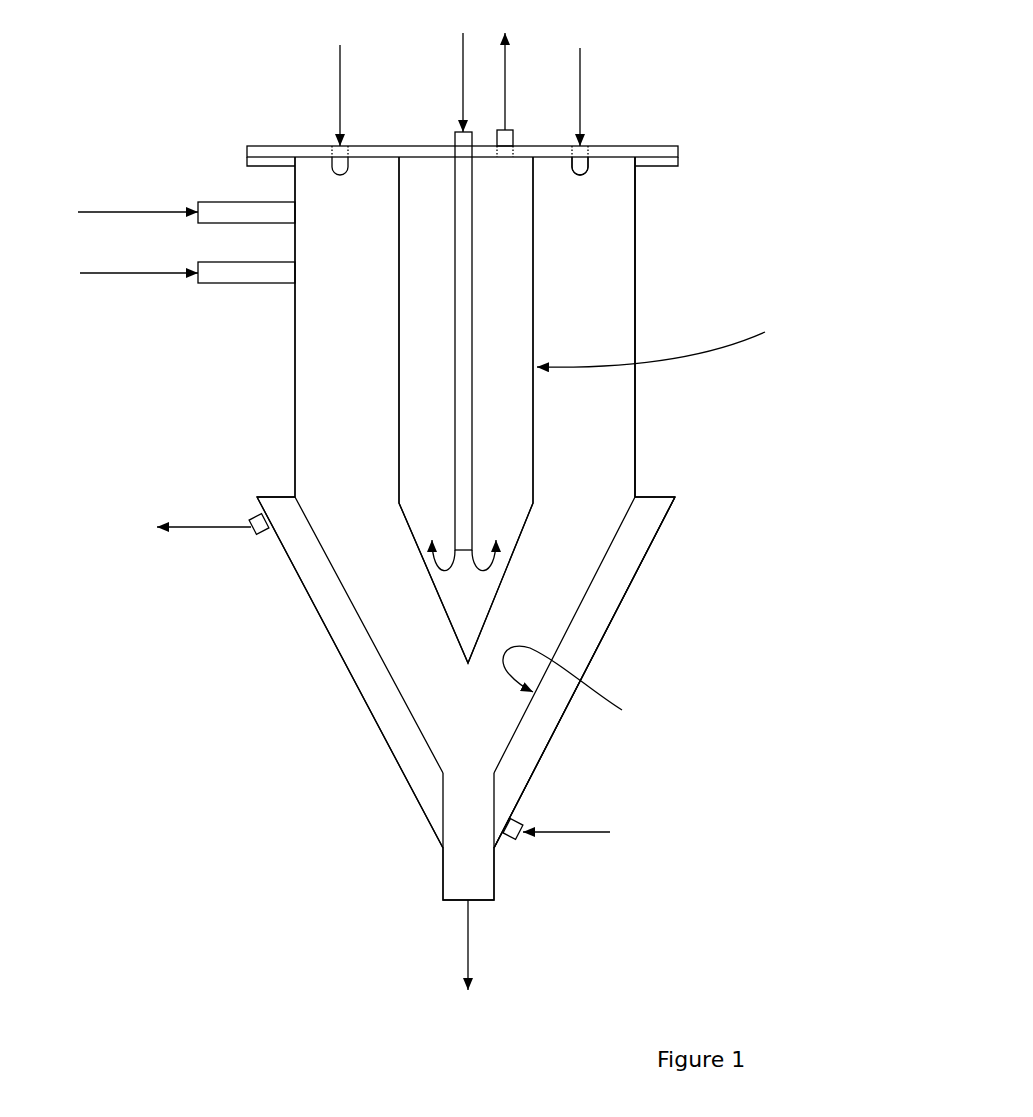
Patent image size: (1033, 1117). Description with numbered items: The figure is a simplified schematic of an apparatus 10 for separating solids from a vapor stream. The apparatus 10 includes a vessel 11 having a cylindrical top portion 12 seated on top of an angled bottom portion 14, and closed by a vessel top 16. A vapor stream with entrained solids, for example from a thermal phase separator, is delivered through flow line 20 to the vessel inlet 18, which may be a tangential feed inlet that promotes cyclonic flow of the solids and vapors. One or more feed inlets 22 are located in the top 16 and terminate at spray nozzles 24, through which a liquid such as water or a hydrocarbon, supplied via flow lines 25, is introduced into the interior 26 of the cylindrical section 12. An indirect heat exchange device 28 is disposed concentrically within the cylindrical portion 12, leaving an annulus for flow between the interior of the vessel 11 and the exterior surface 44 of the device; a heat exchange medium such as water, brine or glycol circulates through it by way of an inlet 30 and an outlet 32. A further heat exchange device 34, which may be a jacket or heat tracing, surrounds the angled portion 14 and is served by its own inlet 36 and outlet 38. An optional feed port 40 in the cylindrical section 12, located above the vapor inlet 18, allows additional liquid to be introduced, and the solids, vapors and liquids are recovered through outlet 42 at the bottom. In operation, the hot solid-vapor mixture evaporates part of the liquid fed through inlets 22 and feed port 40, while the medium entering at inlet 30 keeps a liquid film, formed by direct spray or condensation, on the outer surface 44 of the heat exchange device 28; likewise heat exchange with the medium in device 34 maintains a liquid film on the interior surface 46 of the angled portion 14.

The apparatus 10 is at (213, 752).
The vessel 11 is at (639, 275).
The cylindrical top portion 12 is at (636, 412).
The angled bottom portion 14 is at (627, 521).
The vessel top 16 is at (620, 146).
The vessel inlet 18 is at (233, 285).
The flow line 20 is at (122, 275).
The feed inlets 22 is at (333, 146).
The spray nozzles 24 is at (590, 170).
The flow lines 25 is at (340, 100).
The interior 26 is at (333, 407).
The indirect heat exchange device 28 is at (487, 456).
The inlet 30 is at (453, 135).
The outlet 32 is at (513, 132).
The heat exchange device 34 is at (632, 585).
The inlet 36 is at (513, 841).
The outlet 38 is at (253, 538).
The feed port 40 is at (218, 202).
The outlet 42 is at (458, 905).
The exterior surface 44 is at (666, 340).
The interior surface 46 is at (571, 693).